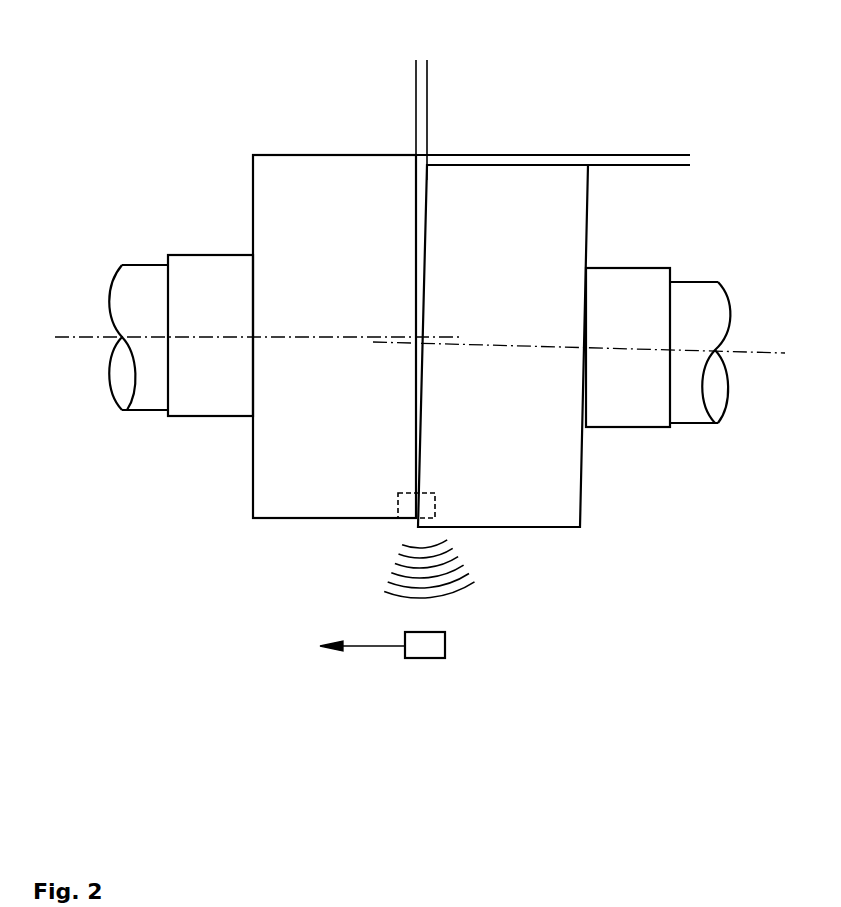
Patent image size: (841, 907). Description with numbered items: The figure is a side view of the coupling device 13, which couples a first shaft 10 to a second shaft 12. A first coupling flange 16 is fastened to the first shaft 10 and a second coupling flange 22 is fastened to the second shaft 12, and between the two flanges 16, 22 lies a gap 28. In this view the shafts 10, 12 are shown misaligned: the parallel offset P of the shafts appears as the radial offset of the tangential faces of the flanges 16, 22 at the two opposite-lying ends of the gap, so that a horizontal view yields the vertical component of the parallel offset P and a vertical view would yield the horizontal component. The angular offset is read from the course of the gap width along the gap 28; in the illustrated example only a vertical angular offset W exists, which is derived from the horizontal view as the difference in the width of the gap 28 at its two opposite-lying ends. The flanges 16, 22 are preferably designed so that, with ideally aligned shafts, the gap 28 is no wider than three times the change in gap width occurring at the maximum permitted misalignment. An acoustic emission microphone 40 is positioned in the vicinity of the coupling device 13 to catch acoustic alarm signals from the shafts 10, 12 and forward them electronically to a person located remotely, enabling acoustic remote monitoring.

The coupling device 13 is at (200, 110).
The first coupling flange 16 is at (270, 197).
The first shaft 10 is at (138, 278).
The vertical angular offset W is at (418, 271).
The parallel offset P is at (564, 160).
The gap 28 is at (421, 167).
The second coupling flange 22 is at (572, 227).
The second shaft 12 is at (680, 412).
The acoustic emission microphone 40 is at (437, 648).